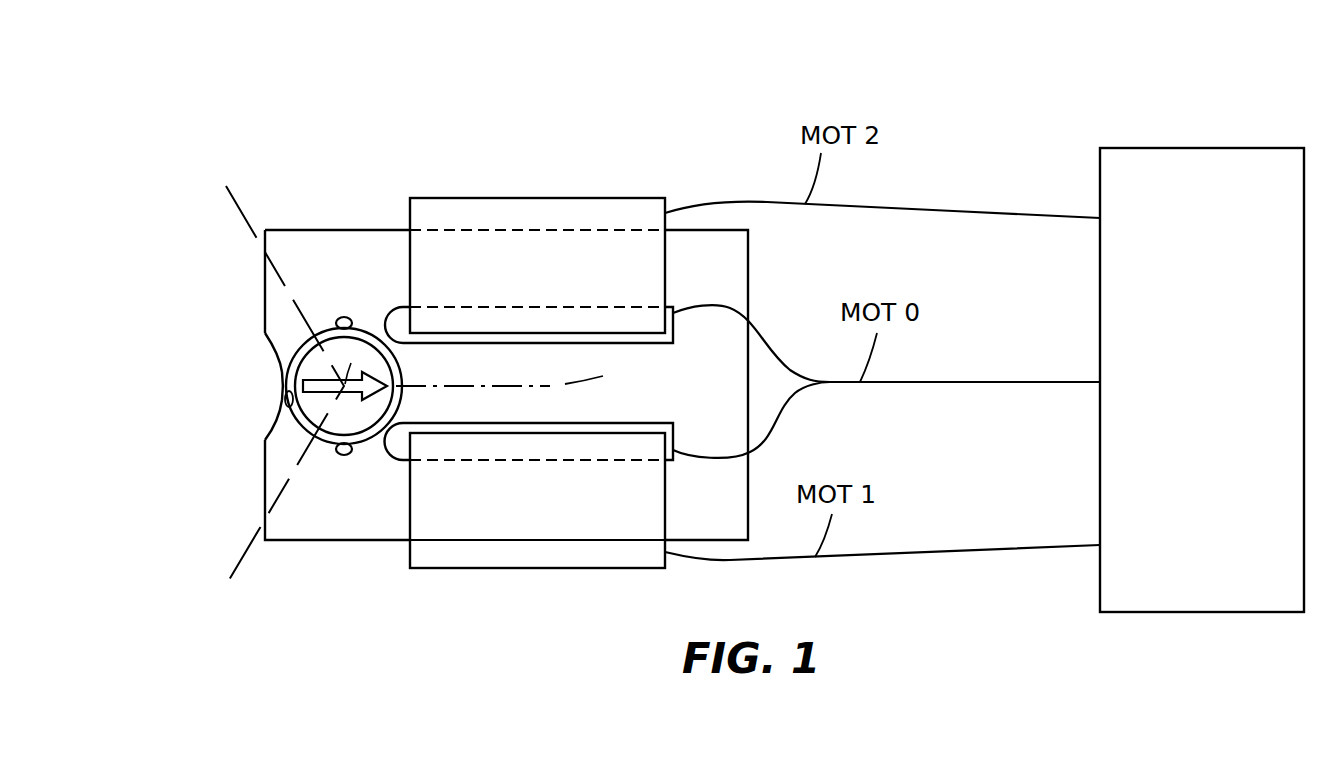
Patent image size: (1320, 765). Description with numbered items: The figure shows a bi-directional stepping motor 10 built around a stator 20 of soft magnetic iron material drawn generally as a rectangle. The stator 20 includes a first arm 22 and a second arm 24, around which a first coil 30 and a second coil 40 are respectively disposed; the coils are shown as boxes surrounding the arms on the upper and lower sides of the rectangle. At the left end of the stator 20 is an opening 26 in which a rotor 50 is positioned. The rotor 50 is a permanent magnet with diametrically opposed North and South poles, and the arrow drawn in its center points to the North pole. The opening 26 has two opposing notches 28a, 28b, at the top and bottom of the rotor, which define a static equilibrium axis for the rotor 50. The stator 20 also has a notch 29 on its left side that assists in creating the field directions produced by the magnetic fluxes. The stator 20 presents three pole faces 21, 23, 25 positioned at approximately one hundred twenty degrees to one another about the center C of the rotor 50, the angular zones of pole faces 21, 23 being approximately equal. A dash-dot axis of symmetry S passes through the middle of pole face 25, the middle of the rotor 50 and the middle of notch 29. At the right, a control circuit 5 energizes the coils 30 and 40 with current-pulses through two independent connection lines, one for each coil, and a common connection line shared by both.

The control circuit 5 is at (1192, 436).
The bi-directional stepping motor 10 is at (347, 113).
The stator 20 is at (309, 549).
The first pole face 21 is at (286, 348).
The first arm 22 is at (606, 276).
The second pole face 23 is at (277, 483).
The second arm 24 is at (598, 513).
The third pole face 25 is at (433, 379).
The opening 26 is at (289, 409).
The first notch 28a is at (346, 317).
The second notch 28b is at (346, 456).
The notch 29 is at (263, 358).
The first coil 30 is at (448, 198).
The second coil 40 is at (467, 570).
The rotor 50 is at (312, 405).